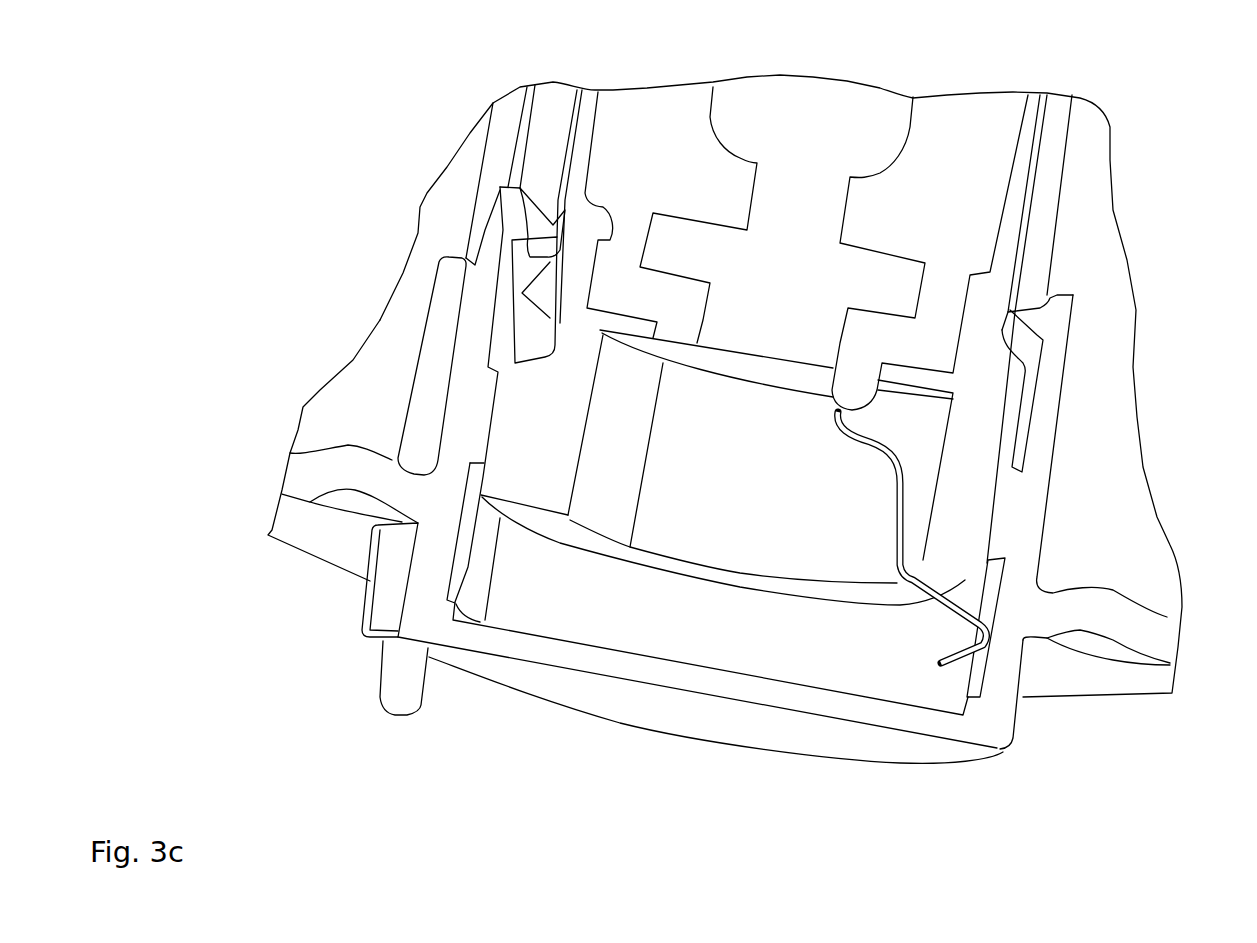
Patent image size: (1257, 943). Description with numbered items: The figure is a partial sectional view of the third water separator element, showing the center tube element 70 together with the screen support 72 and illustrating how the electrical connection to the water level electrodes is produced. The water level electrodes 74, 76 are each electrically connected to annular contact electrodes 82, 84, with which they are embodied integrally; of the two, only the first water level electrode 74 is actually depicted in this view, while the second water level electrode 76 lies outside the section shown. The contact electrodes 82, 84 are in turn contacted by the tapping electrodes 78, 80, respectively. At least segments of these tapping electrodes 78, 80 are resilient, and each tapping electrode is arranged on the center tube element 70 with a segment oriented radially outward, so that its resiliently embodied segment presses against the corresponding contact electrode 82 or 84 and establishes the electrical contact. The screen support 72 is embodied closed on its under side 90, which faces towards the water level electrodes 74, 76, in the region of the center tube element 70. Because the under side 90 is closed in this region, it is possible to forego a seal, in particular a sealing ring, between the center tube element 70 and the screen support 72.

The center tube element 70 is at (725, 419).
The screen support 72 is at (1023, 740).
The first water level electrode 74 is at (392, 690).
The second water level electrode 76 is at (538, 275).
The tapping electrode 78 is at (675, 112).
The tapping electrode 80 is at (980, 108).
The annular contact electrode 82 is at (998, 575).
The annular contact electrode 84 is at (1032, 378).
The under side 90 is at (702, 677).